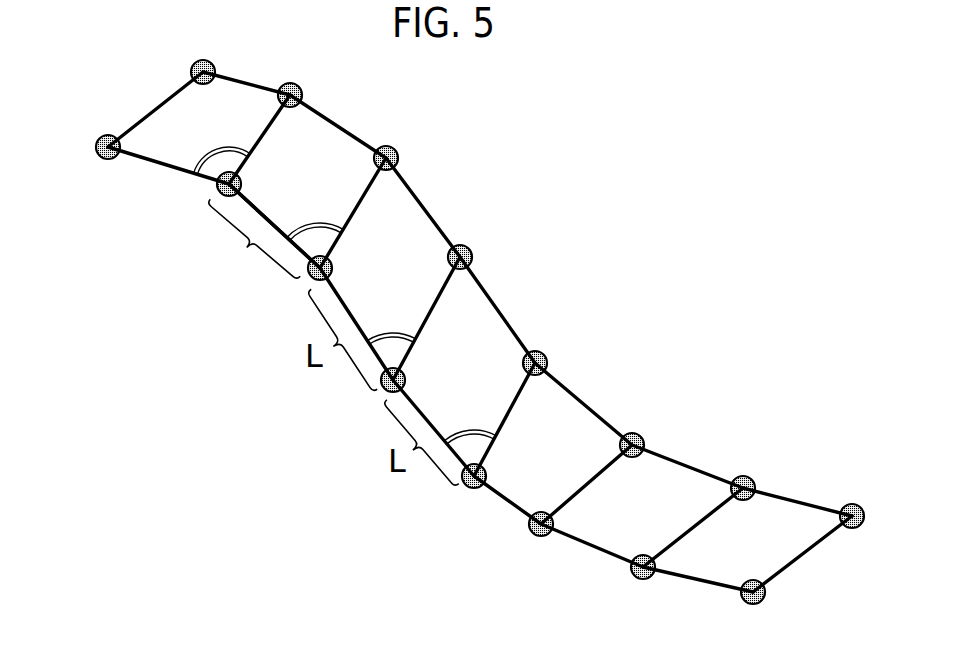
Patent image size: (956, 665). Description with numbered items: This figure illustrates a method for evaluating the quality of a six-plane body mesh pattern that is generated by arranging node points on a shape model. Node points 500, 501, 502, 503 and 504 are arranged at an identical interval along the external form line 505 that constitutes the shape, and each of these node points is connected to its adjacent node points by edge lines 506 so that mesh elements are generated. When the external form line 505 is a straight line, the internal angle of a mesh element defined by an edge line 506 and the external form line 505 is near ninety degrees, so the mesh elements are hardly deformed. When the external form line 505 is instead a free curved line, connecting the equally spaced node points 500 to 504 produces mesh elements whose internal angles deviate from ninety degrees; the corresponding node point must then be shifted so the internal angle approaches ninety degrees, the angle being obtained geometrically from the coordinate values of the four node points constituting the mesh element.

The node point 500 is at (219, 186).
The node point 501 is at (215, 262).
The node point 502 is at (311, 278).
The node point 503 is at (385, 389).
The node point 504 is at (464, 485).
The external form line 505 is at (276, 209).
The edge line 506 is at (353, 218).